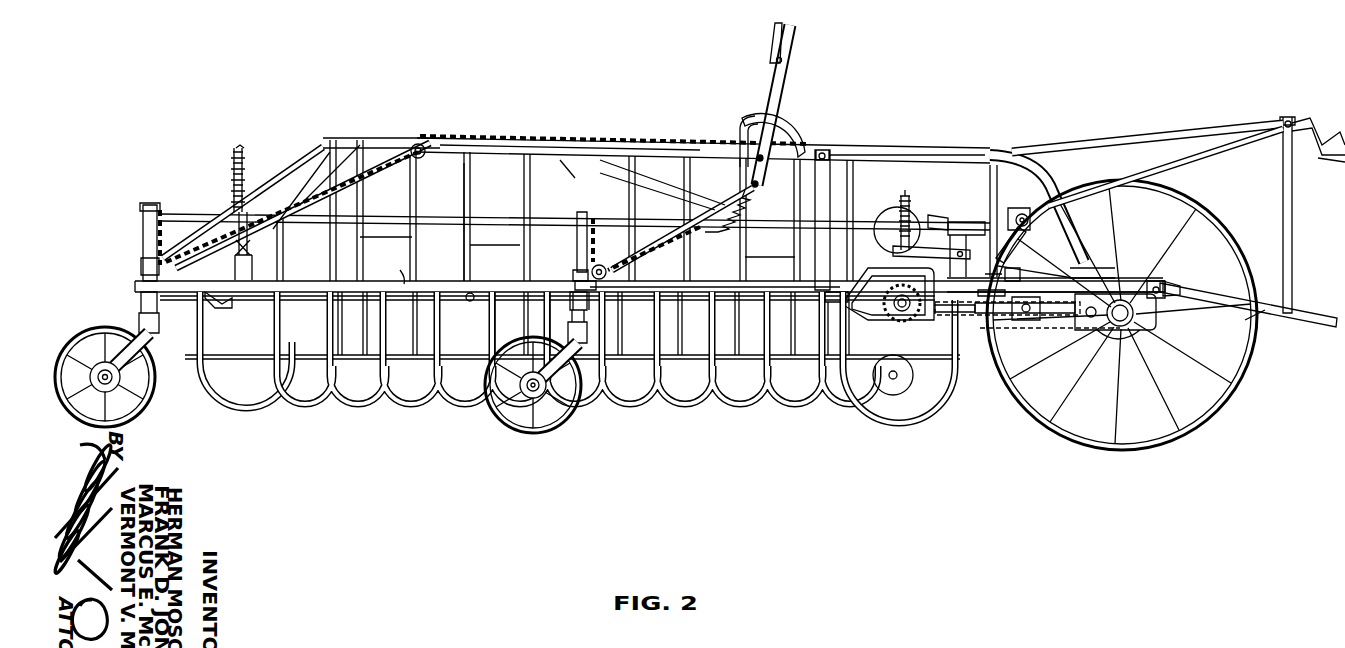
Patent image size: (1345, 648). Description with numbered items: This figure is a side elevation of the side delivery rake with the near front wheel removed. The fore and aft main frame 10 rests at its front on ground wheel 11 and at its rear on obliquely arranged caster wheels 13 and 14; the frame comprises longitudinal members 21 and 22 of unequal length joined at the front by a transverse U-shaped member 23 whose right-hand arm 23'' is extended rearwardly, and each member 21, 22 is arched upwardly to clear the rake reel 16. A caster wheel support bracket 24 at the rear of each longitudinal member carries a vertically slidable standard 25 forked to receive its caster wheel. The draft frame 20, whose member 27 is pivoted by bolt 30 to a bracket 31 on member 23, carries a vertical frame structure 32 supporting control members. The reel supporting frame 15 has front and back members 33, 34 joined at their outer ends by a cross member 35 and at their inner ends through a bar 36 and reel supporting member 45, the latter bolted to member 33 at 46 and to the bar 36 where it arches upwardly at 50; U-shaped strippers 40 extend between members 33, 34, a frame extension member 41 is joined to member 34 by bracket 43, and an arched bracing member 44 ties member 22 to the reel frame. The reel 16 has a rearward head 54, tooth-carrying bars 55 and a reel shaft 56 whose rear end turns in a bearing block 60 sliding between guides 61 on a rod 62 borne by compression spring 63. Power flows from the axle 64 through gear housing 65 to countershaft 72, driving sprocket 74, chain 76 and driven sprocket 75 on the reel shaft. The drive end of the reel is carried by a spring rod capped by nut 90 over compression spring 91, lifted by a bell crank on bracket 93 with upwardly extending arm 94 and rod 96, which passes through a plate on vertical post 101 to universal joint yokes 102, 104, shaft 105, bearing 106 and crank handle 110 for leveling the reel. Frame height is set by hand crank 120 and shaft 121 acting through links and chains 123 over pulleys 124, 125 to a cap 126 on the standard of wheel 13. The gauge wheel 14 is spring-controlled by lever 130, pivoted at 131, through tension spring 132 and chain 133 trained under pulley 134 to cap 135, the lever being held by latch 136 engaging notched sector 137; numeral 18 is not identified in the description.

The main frame 10 is at (967, 140).
The ground wheel 11 is at (1213, 402).
The caster wheel 13 is at (98, 330).
The caster wheel 14 is at (500, 414).
The reel supporting frame 15 is at (661, 186).
The rake reel 16 is at (488, 217).
The bracket 18 is at (992, 310).
The draft frame 20 is at (1258, 325).
The longitudinal frame member 21 is at (677, 146).
The longitudinal frame member 22 is at (876, 148).
The U-shaped member 23 is at (1055, 262).
The right-hand arm 23'' is at (1027, 336).
The caster wheel support bracket 24 is at (142, 268).
The standard 25 is at (142, 238).
The draft frame member 27 is at (1302, 325).
The pivot bolt 30 is at (1160, 282).
The bracket 31 is at (1162, 270).
The vertical frame structure 32 is at (1300, 221).
The front member 33 is at (568, 180).
The back member 34 is at (697, 285).
The cross member 35 is at (220, 220).
The bar 36 is at (836, 305).
The U-shaped stripper 40 is at (577, 247).
The frame extension member 41 is at (391, 268).
The bracket 43 is at (610, 296).
The arched bracing member 44 is at (834, 202).
The reel supporting member 45 is at (1038, 268).
The bolt 46 is at (1035, 258).
The arch 50 is at (893, 270).
The rearward head 54 is at (280, 300).
The tooth-carrying bar 55 is at (445, 217).
The reel shaft 56 is at (472, 296).
The bearing block 60 is at (218, 302).
The guide 61 is at (256, 262).
The vertical rod 62 is at (251, 233).
The compression spring 63 is at (246, 185).
The transverse axle 64 is at (1132, 316).
The gear housing 65 is at (1108, 295).
The countershaft 72 is at (1028, 322).
The driving sprocket 74 is at (1020, 318).
The driven sprocket 75 is at (906, 315).
The driving chain 76 is at (968, 320).
The nut 90 is at (905, 188).
The compression spring 91 is at (884, 222).
The bracket 93 is at (948, 251).
The upwardly extending arm 94 is at (928, 216).
The rod 96 is at (983, 220).
The vertical post 101 is at (990, 182).
The universal joint yoke 102 is at (1008, 215).
The second yoke 104 is at (1027, 216).
The shaft 105 is at (1203, 170).
The bearing 106 is at (1283, 119).
The crank handle 110 is at (1322, 116).
The hand crank 120 is at (1322, 163).
The shaft 121 is at (1120, 140).
The links and chains 123 is at (608, 131).
The pulley 124 is at (415, 145).
The pulley 125 is at (168, 258).
The cap 126 is at (150, 204).
The lever 130 is at (778, 100).
The pivot 131 is at (762, 170).
The tension spring 132 is at (732, 212).
The chain 133 is at (645, 254).
The pulley 134 is at (602, 265).
The cap 135 is at (593, 219).
The latch 136 is at (761, 96).
The notched sector 137 is at (795, 143).